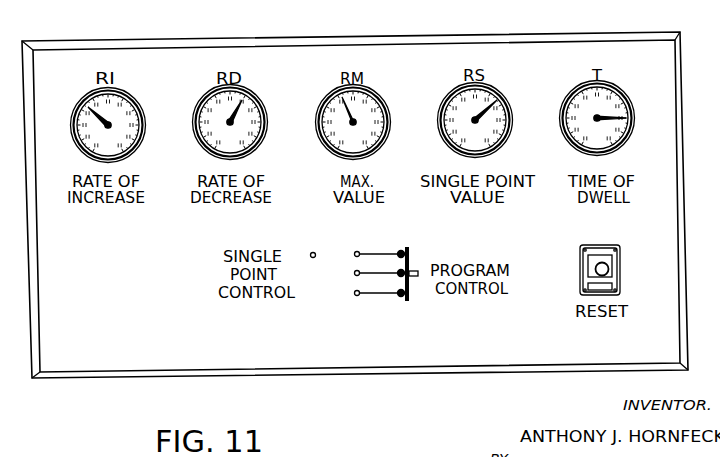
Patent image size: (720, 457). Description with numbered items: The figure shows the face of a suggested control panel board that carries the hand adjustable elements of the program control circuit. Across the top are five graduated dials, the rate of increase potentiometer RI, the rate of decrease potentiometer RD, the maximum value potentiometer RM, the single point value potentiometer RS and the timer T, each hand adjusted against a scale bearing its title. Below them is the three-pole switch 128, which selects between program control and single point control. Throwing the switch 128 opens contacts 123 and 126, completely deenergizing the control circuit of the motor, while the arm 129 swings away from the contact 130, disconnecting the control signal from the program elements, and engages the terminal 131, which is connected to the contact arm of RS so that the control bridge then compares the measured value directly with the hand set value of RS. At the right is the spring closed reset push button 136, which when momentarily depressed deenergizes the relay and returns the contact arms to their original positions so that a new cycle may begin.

The contact 123 is at (375, 296).
The contact 126 is at (355, 277).
The 3-pole switch 128 is at (404, 301).
The arm 129 is at (378, 252).
The contact 130 is at (394, 249).
The terminal 131 is at (314, 252).
The reset push button 136 is at (600, 261).